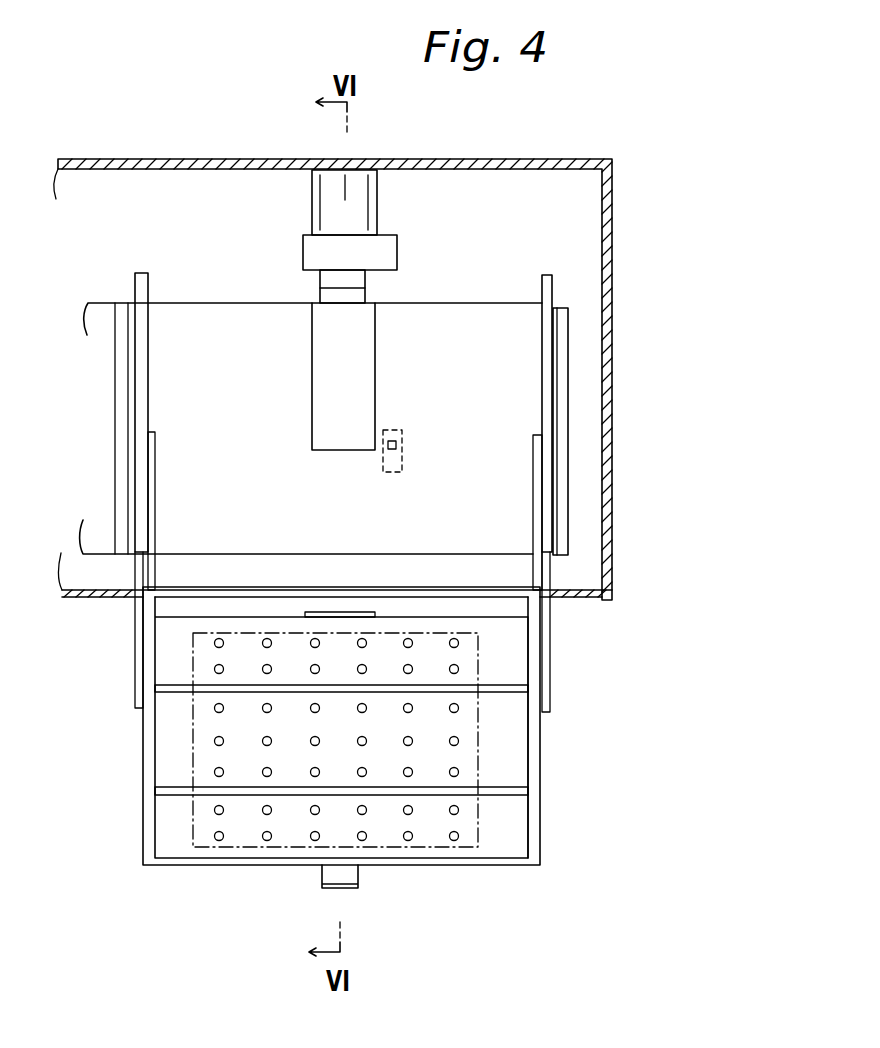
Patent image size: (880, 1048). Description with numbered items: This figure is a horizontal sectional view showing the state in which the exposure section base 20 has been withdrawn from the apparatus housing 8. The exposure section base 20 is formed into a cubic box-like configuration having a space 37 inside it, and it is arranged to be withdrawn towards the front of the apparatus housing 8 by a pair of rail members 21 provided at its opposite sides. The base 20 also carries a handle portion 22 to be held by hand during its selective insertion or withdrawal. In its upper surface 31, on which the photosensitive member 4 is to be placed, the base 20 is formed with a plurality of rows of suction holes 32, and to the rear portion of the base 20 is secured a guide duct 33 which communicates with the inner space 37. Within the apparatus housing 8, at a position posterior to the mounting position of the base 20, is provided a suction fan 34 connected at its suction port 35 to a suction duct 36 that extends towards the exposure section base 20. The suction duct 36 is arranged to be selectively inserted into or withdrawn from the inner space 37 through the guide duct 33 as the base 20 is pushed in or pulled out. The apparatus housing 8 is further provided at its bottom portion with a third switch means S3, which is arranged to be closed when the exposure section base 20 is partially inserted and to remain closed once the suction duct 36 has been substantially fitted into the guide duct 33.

The apparatus housing 8 is at (607, 380).
The rail members 21 is at (140, 568).
The suction fan 34 is at (383, 256).
The suction port 35 is at (356, 278).
The suction duct 36 is at (362, 363).
The third switch means S3 is at (399, 445).
The exposure section base 20 is at (177, 840).
The space 37 is at (510, 850).
The guide duct 33 is at (347, 612).
The upper surface 31 is at (466, 760).
The photosensitive member 4 is at (458, 845).
The suction holes 32 is at (214, 770).
The handle portion 22 is at (352, 877).